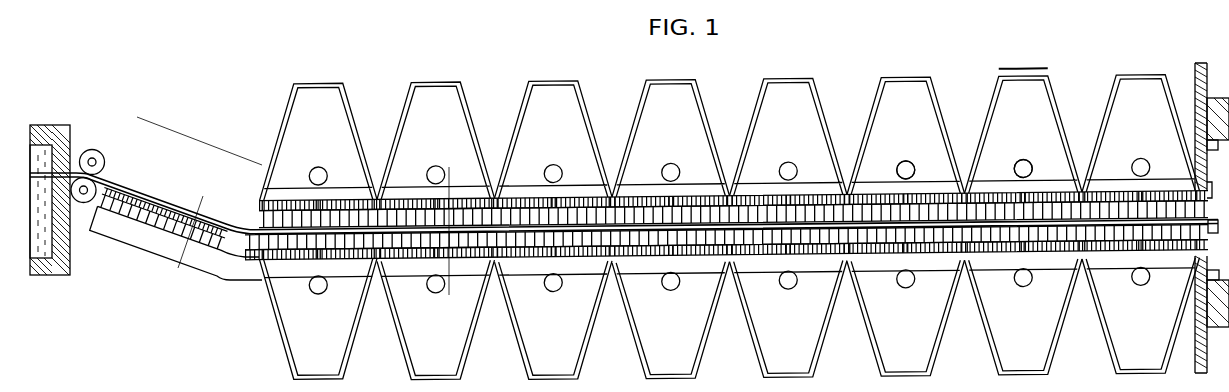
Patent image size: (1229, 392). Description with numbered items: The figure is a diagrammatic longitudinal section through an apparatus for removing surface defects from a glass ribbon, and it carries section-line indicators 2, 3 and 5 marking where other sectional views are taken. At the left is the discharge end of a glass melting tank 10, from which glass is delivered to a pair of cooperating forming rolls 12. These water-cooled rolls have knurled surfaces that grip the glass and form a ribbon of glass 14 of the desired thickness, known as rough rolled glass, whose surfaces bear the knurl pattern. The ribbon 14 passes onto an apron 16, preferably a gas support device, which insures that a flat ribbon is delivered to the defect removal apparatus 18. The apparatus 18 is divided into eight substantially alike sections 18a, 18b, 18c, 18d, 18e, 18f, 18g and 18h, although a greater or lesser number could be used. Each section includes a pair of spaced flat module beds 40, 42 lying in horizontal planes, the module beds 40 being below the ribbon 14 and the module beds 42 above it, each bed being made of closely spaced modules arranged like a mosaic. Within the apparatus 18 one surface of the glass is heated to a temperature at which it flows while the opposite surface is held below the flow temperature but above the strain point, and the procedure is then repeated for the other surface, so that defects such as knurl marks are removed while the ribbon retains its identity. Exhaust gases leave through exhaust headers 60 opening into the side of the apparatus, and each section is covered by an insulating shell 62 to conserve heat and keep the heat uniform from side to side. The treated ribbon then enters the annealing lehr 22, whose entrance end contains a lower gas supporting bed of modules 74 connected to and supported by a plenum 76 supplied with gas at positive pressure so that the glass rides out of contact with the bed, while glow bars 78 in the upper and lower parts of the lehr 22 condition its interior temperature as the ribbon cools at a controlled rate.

The section line 2- 2 is at (258, 179).
The section line 3- 3 is at (178, 281).
The section line 5- 5 is at (456, 299).
The glass melting tank 10 is at (57, 121).
The forming rolls 12 is at (103, 162).
The ribbon of glass 14 is at (118, 182).
The apron 16 is at (130, 250).
The defect removal apparatus 18 is at (725, 213).
The section 18a is at (288, 112).
The section 18b is at (401, 112).
The section 18c is at (519, 112).
The section 18d is at (637, 114).
The section 18e is at (755, 113).
The section 18f is at (873, 112).
The section 18g is at (988, 114).
The section 18h is at (1108, 108).
The annealing lehr 22 is at (1195, 78).
The module beds 40 is at (359, 270).
The module beds 42 is at (359, 193).
The exhaust headers 60 is at (1022, 165).
The insulating shell 62 is at (1019, 74).
The modules 74 is at (1218, 189).
The plenum 76 is at (1198, 258).
The glow bars 78 is at (1214, 150).